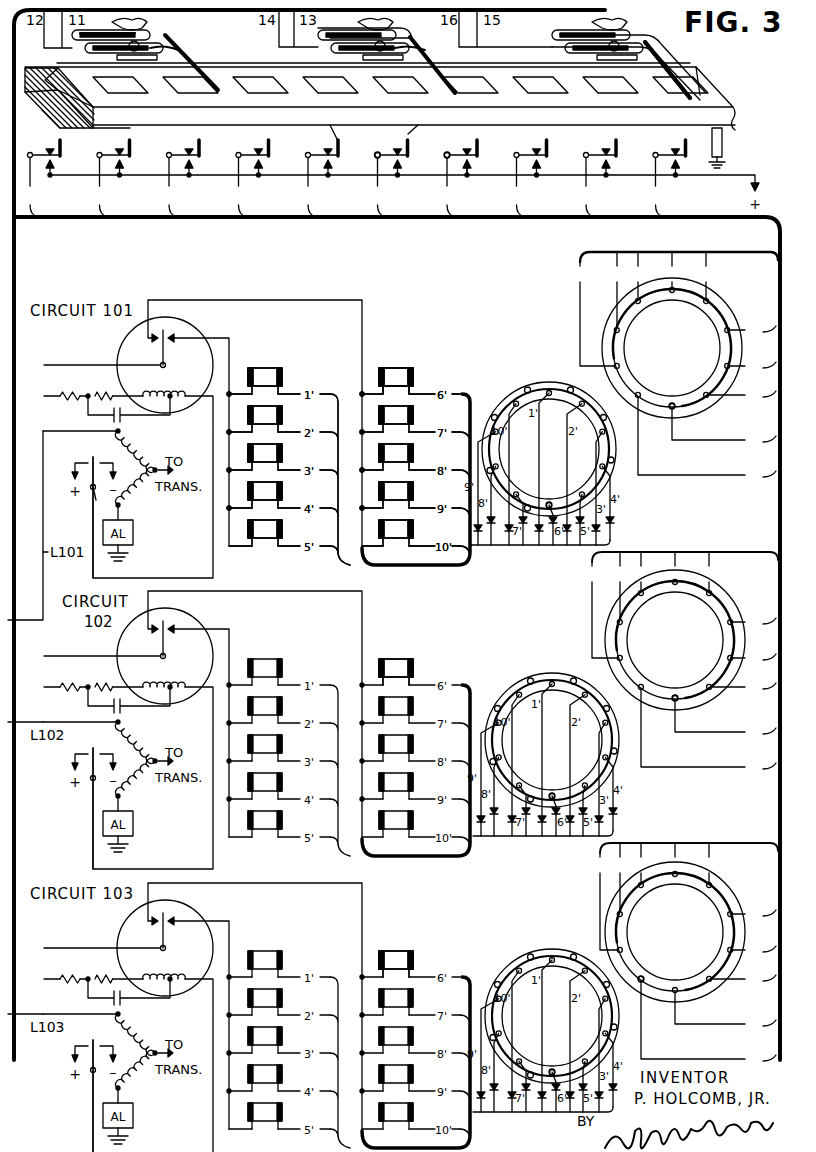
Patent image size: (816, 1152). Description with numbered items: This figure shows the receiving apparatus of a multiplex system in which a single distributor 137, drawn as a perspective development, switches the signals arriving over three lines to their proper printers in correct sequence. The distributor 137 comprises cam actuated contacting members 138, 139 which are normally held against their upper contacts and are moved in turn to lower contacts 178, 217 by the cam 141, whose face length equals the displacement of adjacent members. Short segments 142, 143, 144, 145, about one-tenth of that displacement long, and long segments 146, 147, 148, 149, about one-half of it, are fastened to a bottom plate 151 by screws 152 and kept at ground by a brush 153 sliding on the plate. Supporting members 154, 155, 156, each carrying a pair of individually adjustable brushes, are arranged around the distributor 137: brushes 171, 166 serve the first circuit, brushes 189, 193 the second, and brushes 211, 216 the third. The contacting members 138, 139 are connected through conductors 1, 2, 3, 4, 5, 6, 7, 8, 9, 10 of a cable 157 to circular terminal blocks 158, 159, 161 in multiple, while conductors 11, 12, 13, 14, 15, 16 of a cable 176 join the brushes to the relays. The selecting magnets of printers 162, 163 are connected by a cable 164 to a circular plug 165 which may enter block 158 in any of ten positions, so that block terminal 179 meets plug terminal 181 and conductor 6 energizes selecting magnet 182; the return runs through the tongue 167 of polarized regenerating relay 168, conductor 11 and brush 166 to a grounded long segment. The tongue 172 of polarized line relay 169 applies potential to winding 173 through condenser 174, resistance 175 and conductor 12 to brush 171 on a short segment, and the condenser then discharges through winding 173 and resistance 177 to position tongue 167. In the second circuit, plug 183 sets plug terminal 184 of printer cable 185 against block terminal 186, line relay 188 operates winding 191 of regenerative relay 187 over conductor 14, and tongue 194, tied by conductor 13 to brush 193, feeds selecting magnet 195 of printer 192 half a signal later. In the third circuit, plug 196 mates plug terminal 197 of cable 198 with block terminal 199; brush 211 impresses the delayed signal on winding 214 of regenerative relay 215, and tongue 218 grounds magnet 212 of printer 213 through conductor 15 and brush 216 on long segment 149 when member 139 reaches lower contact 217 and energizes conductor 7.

The output conductor 1 is at (43, 178).
The output conductor 2 is at (112, 178).
The output conductor 3 is at (182, 178).
The output conductor 4 is at (251, 178).
The output conductor 5 is at (321, 178).
The conductor of cable 157 6 is at (390, 178).
The conductor of cable 157 7 is at (460, 178).
The output conductor 8 is at (529, 178).
The output conductor 9 is at (599, 178).
The output conductor 10 is at (666, 178).
The conductor of cable 176 11 is at (93, 365).
The conductor of cable 176 12 is at (43, 396).
The conductor of cable 176 13 is at (93, 656).
The conductor of cable 176 14 is at (43, 687).
The conductor of cable 176 15 is at (93, 948).
The input conductor 16 is at (43, 979).
The distributor 137 is at (738, 104).
The cam actuated contacting member 138 is at (381, 158).
The cam actuated contacting member 139 is at (450, 158).
The cam 141 is at (368, 143).
The short segment 142 is at (78, 85).
The short segment 143 is at (218, 92).
The short segment 144 is at (470, 94).
The short segment 145 is at (702, 95).
The long segment 146 is at (57, 78).
The long segment 147 is at (192, 82).
The long segment 148 is at (472, 82).
The long segment 149 is at (657, 88).
The bottom plate 151 is at (110, 127).
The screws 152 is at (76, 118).
The brush 153 is at (723, 148).
The supporting member 154 is at (145, 27).
The supporting member 155 is at (345, 27).
The supporting member 156 is at (565, 27).
The cable 157 is at (778, 237).
The circular terminal block 158 is at (720, 316).
The circular terminal block 159 is at (719, 610).
The circular terminal block 161 is at (719, 900).
The printer 162 is at (265, 360).
The printer 163 is at (400, 360).
The cable 164 is at (470, 562).
The circular plug 165 is at (548, 383).
The brush 166 is at (165, 33).
The tongue 167 is at (160, 354).
The polarized relay 168 is at (185, 332).
The polarized line relay 169 is at (109, 452).
The brush 171 is at (180, 52).
The tongue 172 is at (92, 490).
The winding 173 is at (163, 392).
The condenser 174 is at (122, 418).
The resistance 175 is at (70, 400).
The cable 176 is at (14, 252).
The resistance 177 is at (104, 391).
The lower contact 178 is at (405, 158).
The block terminal 179 is at (676, 411).
The plug terminal 181 is at (552, 500).
The selecting magnet 182 is at (408, 378).
The plug 183 is at (553, 674).
The plug terminal 184 is at (555, 792).
The printer cable 185 is at (433, 775).
The block terminal 186 is at (679, 702).
The regenerative relay 187 is at (171, 653).
The line relay 188 is at (96, 798).
The brush 189 is at (428, 48).
The winding 191 is at (171, 673).
The printer 192 is at (415, 736).
The brush 193 is at (408, 30).
The tongue 194 is at (145, 640).
The selecting magnet 195 is at (414, 668).
The plug 196 is at (555, 950).
The plug terminal 197 is at (555, 1066).
The cable 198 is at (433, 1064).
The block terminal 199 is at (642, 976).
The brush 211 is at (665, 57).
The selecting magnet 212 is at (414, 960).
The printer 213 is at (415, 1028).
The winding 214 is at (171, 965).
The regenerative relay 215 is at (171, 945).
The brush 216 is at (664, 38).
The lower contact 217 is at (469, 160).
The tongue 218 is at (145, 932).